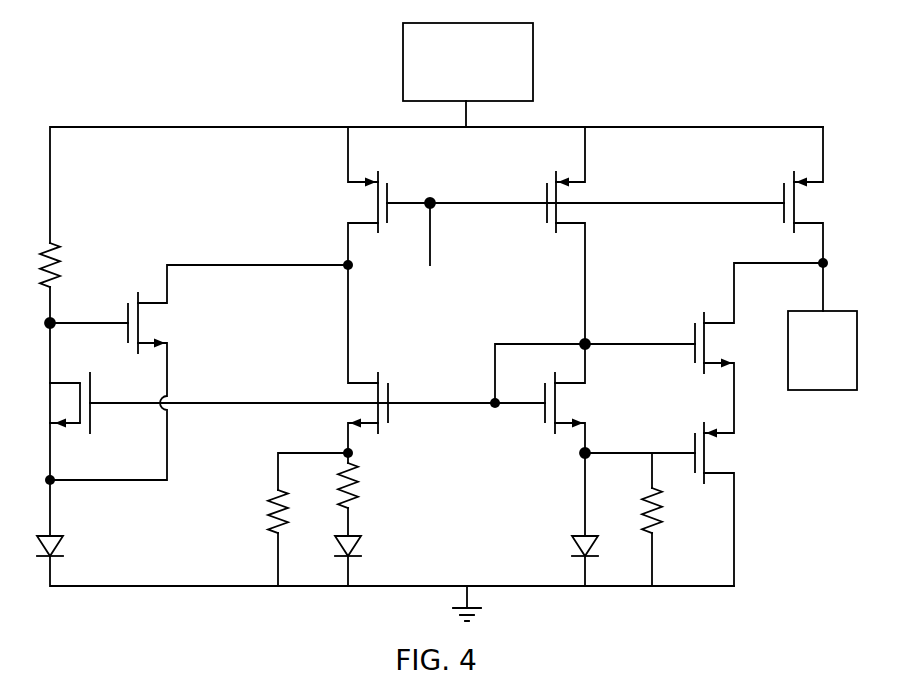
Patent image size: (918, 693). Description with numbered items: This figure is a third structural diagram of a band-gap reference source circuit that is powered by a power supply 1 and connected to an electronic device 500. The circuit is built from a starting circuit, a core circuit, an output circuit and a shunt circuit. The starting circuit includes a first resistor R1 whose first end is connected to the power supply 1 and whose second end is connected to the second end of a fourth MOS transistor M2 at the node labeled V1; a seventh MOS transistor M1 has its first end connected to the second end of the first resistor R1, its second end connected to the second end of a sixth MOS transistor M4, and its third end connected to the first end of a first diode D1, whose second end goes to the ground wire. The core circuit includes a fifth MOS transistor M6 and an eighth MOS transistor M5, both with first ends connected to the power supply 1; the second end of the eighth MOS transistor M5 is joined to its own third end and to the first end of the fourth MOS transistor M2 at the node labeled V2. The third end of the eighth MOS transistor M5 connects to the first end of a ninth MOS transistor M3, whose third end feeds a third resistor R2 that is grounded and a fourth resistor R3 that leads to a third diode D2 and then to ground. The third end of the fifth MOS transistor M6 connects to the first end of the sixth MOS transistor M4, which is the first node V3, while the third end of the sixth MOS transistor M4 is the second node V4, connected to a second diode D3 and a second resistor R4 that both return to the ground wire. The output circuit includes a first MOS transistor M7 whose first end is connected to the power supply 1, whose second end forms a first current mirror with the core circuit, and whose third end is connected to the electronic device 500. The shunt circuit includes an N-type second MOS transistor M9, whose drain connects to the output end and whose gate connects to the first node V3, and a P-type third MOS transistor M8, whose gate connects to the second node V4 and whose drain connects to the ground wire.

The power supply 1 is at (450, 81).
The electronic device 500 is at (803, 377).
The first resistor R1 is at (37, 265).
The third resistor R2 is at (260, 511).
The fourth resistor R3 is at (366, 485).
The second resistor R4 is at (637, 510).
The first diode D1 is at (38, 547).
The third diode D2 is at (365, 544).
The second diode D3 is at (566, 547).
The seventh MOS transistor M1 is at (54, 403).
The fourth MOS transistor M2 is at (156, 323).
The ninth MOS transistor M3 is at (378, 394).
The sixth MOS transistor M4 is at (536, 407).
The eighth MOS transistor M5 is at (357, 202).
The fifth MOS transistor M6 is at (537, 208).
The first MOS transistor M7 is at (770, 200).
The third MOS transistor M8 is at (733, 453).
The second MOS transistor M9 is at (730, 343).
The node voltage V1 is at (36, 323).
The node voltage V2 is at (430, 189).
The first node V3 is at (567, 336).
The second node V4 is at (597, 446).